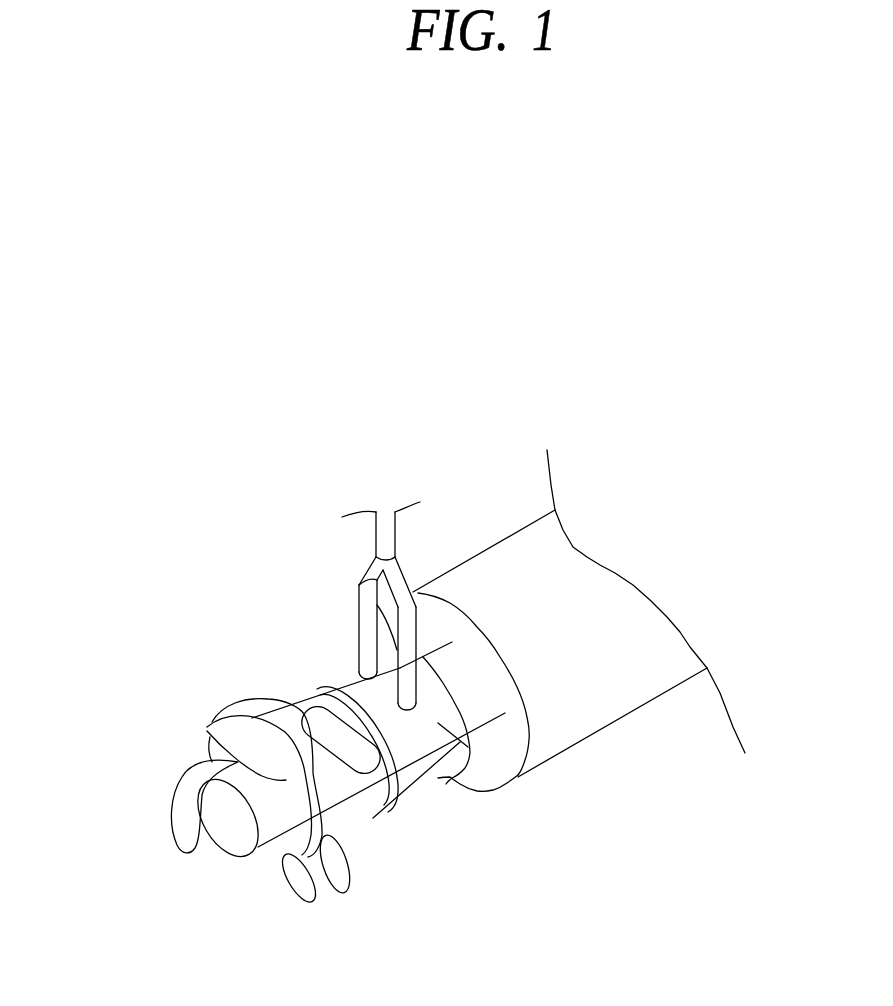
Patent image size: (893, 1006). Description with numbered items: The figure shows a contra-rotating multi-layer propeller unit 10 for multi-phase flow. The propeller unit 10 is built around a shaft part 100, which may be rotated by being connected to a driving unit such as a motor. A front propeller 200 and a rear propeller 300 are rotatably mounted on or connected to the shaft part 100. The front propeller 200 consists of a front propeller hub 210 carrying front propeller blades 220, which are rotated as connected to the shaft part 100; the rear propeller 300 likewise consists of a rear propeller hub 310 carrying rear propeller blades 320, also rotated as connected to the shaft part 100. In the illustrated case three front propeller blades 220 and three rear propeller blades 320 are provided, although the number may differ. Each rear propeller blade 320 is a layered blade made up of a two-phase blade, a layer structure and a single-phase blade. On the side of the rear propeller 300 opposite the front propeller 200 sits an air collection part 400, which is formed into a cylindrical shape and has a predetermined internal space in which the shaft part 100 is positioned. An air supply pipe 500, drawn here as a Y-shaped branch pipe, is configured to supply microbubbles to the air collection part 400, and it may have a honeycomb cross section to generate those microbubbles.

The propeller unit 10 is at (521, 233).
The shaft part 100 is at (518, 777).
The front propeller 200 is at (87, 827).
The front propeller hub 210 is at (230, 845).
The front propeller blades 220 is at (185, 808).
The rear propeller 300 is at (472, 920).
The rear propeller hub 310 is at (348, 830).
The rear propeller blades 320 is at (322, 802).
The air collection part 400 is at (350, 670).
The air supply pipe 500 is at (367, 605).